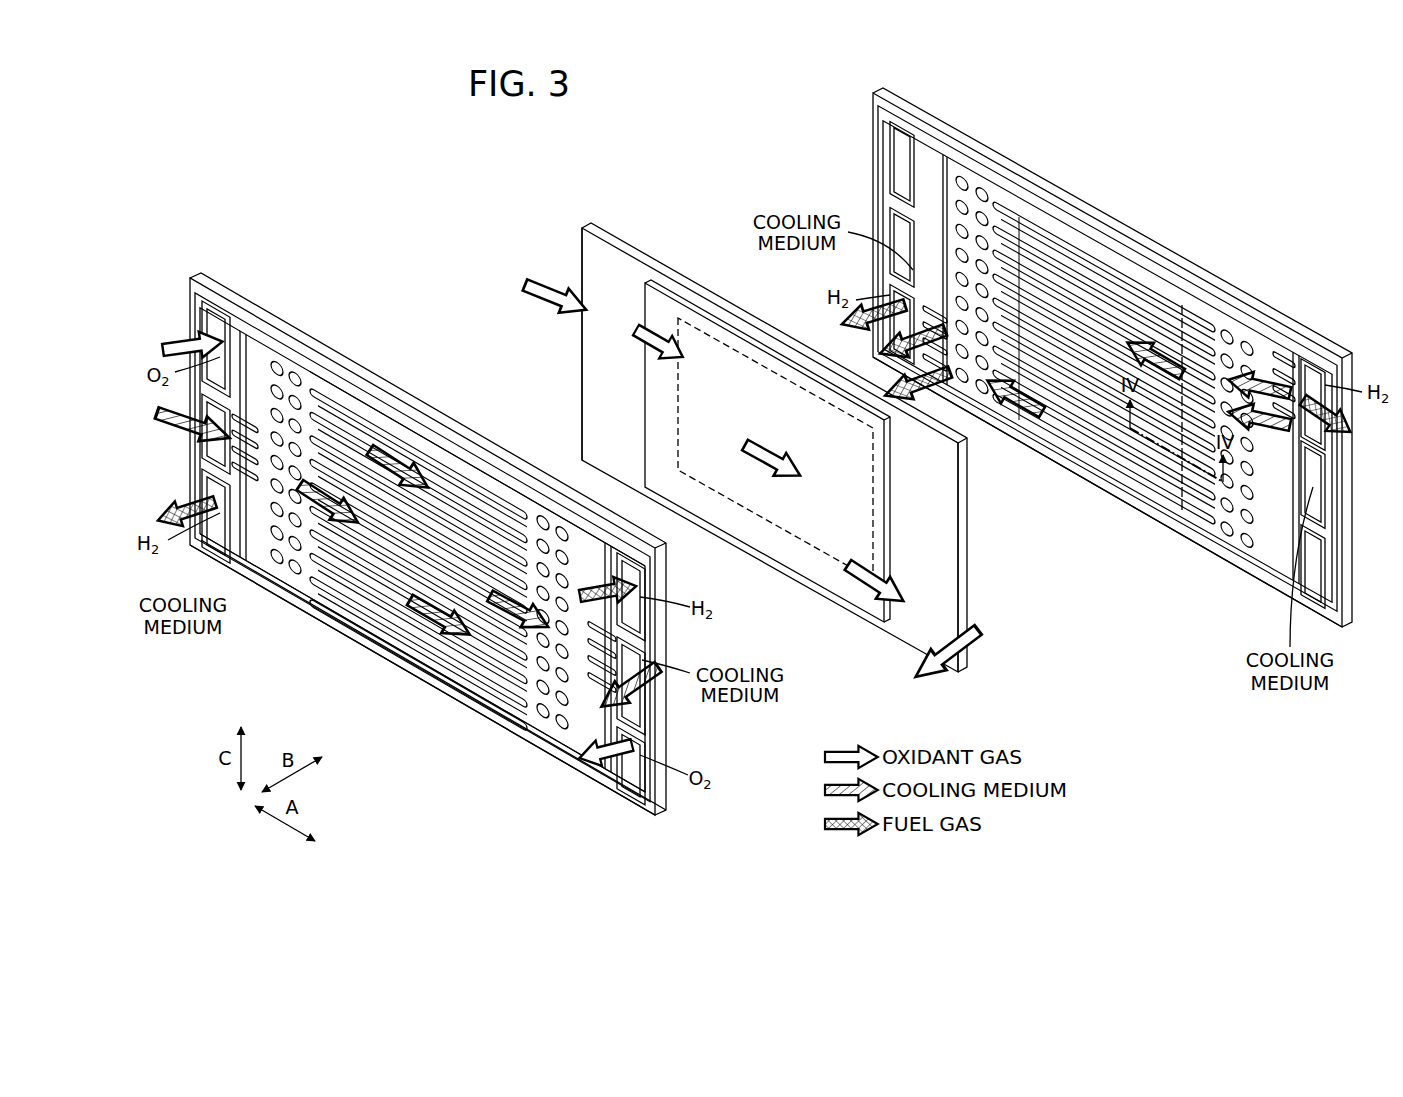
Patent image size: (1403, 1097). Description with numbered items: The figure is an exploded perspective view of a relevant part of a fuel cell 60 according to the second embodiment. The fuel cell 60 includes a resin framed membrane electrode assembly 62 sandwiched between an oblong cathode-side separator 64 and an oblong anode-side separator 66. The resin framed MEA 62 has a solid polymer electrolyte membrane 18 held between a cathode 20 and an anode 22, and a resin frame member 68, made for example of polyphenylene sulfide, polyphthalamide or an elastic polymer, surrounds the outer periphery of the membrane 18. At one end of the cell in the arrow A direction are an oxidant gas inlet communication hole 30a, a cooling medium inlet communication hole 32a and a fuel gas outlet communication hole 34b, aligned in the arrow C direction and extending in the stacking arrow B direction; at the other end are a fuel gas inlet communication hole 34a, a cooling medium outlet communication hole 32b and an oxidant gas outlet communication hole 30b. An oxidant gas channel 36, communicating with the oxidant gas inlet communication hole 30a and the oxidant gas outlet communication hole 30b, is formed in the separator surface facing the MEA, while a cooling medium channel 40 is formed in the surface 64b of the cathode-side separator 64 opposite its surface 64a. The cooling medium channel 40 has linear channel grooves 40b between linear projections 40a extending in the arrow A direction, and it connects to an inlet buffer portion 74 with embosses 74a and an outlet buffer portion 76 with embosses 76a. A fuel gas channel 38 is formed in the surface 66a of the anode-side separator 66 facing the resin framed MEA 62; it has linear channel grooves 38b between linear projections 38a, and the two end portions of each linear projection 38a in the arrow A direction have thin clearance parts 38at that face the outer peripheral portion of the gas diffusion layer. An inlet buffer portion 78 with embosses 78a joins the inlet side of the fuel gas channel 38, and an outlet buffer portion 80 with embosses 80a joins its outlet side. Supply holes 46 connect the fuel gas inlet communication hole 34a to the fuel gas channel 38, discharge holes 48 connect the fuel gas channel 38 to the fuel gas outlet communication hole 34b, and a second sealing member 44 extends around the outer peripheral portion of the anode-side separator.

The fuel cell 60 is at (545, 139).
The resin framed membrane electrode assembly 62 is at (578, 228).
The cathode-side separator 64 is at (200, 272).
The anode-side separator 66 is at (871, 94).
The solid polymer electrolyte membrane 18 is at (770, 385).
The cathode 20 is at (790, 565).
The anode 22 is at (722, 356).
The oxidant gas inlet communication hole 30a is at (217, 325).
The oxidant gas outlet communication hole 30b is at (638, 737).
The cooling medium inlet communication hole 32a is at (212, 597).
The cooling medium outlet communication hole 32b is at (638, 640).
The fuel gas inlet communication hole 34a is at (640, 565).
The fuel gas outlet communication hole 34b is at (217, 488).
The oxidant gas channel 36 is at (385, 602).
The fuel gas channel 38 is at (1132, 300).
The linear projections 38a is at (1070, 415).
The linear channel grooves 38b is at (1077, 430).
The thin clearance parts 38at is at (1010, 237).
The cooling medium channel 40 is at (413, 447).
The linear projections 40a is at (323, 402).
The linear channel grooves 40b is at (363, 430).
The second sealing member 44 is at (487, 470).
The supply holes 46 is at (1293, 352).
The discharge holes 48 is at (935, 290).
The surface 64a is at (450, 700).
The surface 64b is at (427, 675).
The surface 66a is at (1105, 490).
The resin frame member 68 is at (956, 552).
The inlet buffer portion 74 is at (277, 563).
The embosses 74a is at (288, 533).
The outlet buffer portion 76 is at (537, 717).
The embosses 76a is at (557, 678).
The inlet buffer portion 78 is at (1227, 523).
The embosses 78a is at (1233, 513).
The outlet buffer portion 80 is at (988, 205).
The embosses 80a is at (978, 200).